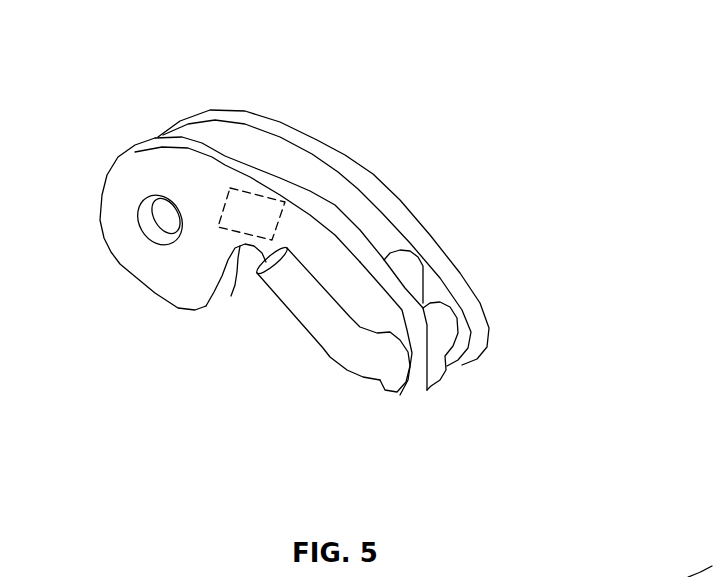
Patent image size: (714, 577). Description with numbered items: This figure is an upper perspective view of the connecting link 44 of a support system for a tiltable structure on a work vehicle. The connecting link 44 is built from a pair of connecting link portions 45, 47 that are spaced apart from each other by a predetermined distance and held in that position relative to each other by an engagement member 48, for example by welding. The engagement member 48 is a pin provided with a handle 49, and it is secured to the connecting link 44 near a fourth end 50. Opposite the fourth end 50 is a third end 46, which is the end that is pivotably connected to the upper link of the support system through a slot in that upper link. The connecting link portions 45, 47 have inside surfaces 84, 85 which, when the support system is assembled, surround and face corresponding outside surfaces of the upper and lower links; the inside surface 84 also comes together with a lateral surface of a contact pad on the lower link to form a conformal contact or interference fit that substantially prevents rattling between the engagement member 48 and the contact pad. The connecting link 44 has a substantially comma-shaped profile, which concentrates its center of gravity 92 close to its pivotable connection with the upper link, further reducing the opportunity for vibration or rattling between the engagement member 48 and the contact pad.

The connecting link 44 is at (444, 70).
The connecting link portion 45 is at (357, 227).
The third end 46 is at (133, 280).
The connecting link portion 47 is at (372, 173).
The engagement member 48 is at (448, 360).
The handle 49 is at (327, 363).
The fourth end 50 is at (490, 330).
The inside surface 84 is at (436, 300).
The inside surface 85 is at (306, 163).
The center of gravity 92 is at (222, 228).